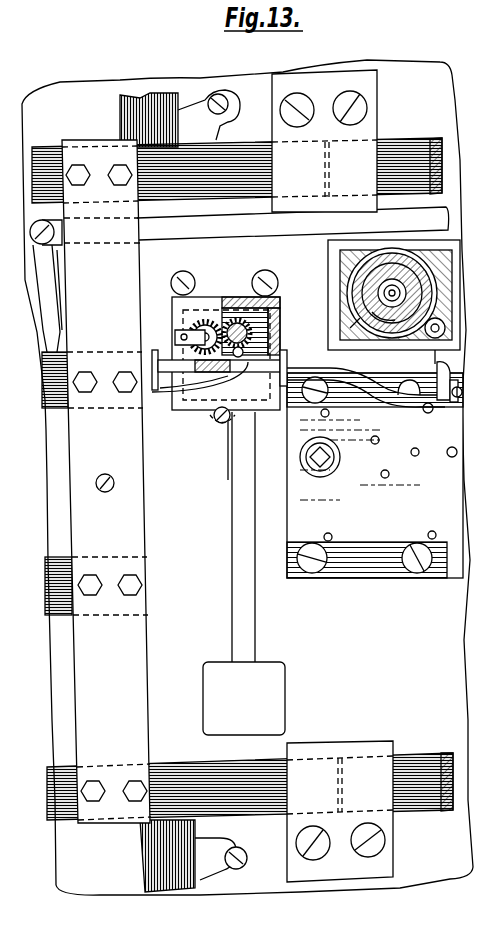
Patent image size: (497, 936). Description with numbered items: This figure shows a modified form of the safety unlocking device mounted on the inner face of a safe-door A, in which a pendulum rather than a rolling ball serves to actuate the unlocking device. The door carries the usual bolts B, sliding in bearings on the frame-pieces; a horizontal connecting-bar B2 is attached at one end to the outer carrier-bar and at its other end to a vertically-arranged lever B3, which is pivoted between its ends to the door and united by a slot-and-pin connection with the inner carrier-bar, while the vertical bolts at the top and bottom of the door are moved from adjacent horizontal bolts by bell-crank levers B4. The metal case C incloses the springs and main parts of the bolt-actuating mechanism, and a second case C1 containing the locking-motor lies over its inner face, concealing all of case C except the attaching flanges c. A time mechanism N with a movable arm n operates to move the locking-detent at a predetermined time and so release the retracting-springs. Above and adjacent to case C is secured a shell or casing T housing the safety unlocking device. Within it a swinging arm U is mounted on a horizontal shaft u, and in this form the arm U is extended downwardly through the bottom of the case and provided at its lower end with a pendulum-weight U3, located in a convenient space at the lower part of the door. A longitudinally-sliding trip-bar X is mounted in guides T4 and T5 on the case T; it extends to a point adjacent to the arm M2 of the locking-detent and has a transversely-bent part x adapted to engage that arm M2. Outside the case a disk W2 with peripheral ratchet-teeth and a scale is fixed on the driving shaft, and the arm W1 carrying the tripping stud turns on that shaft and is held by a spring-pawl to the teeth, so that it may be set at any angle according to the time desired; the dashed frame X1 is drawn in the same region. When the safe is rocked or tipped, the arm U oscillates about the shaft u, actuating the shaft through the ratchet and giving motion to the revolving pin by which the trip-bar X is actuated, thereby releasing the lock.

The safe-door A is at (247, 477).
The bolt B is at (36, 583).
The horizontal connecting-bar B2 is at (255, 481).
The vertically-arranged lever B3 is at (58, 296).
The bell-crank lever B4 is at (212, 485).
The metal box or case C is at (251, 456).
The second case C1 is at (375, 475).
The attaching flange c is at (367, 554).
The time mechanism N is at (394, 295).
The movable arm n is at (434, 358).
The arm of the locking-detent M2 is at (444, 394).
The transversely-bent part x is at (462, 392).
The longitudinally-sliding bar X is at (325, 378).
The frame X1 is at (226, 366).
The shell or casing T is at (225, 340).
The guide T4 is at (286, 368).
The guide T5 is at (160, 356).
The swinging arm U is at (243, 537).
The pendulum-weight U3 is at (244, 698).
The arm W1 is at (205, 326).
The disk W2 is at (180, 326).
The horizontal shaft u is at (244, 338).